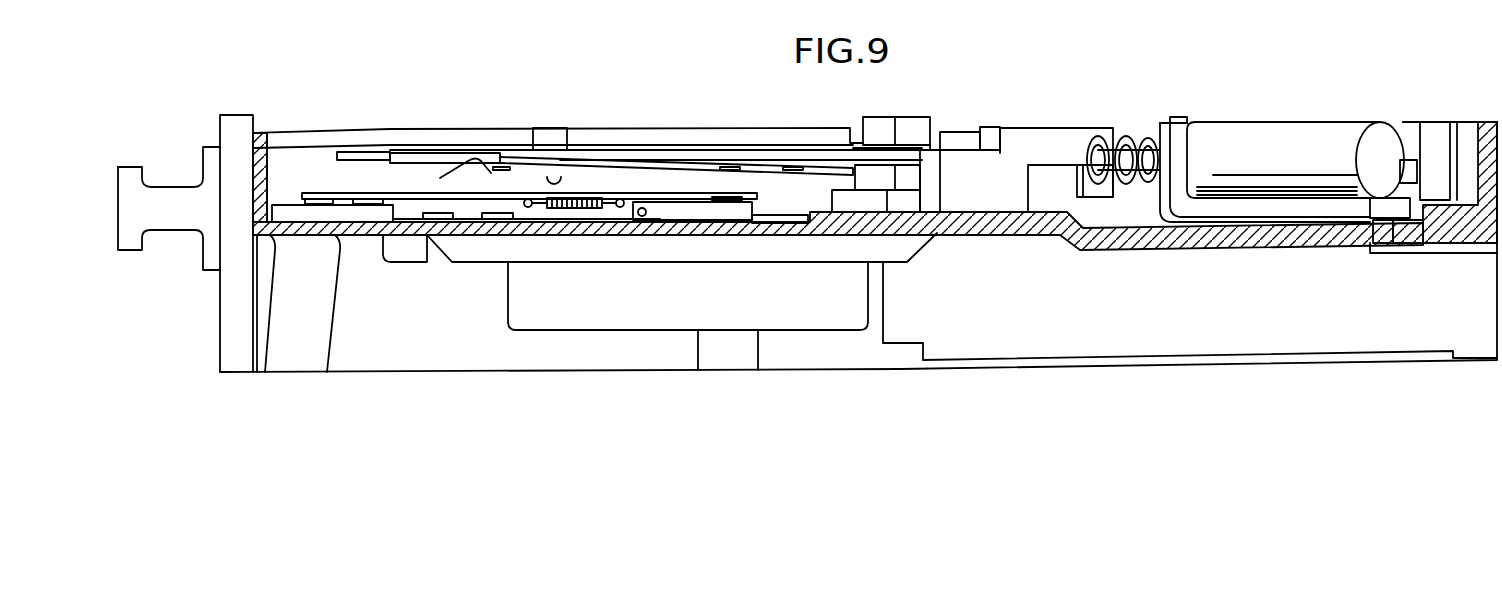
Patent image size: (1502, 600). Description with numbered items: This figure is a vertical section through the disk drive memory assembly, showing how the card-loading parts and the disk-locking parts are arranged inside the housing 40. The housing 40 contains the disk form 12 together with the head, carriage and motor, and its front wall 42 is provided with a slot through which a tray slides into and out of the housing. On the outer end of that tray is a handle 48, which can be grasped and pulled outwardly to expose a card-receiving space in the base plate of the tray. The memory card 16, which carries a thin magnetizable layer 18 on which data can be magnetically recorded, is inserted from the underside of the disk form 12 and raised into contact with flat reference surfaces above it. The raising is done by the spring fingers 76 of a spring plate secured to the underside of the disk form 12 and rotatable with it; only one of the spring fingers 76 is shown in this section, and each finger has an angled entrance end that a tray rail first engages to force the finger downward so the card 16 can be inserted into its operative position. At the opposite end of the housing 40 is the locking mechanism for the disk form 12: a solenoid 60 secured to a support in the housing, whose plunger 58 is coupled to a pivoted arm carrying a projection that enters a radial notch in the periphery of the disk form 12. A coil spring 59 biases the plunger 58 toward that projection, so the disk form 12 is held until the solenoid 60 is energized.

The disk form 12 is at (771, 146).
The memory card 16 is at (331, 163).
The magnetizable layer 18 is at (377, 152).
The housing 40 is at (216, 375).
The front wall 42 is at (247, 116).
The handle 48 is at (140, 167).
The plunger 58 is at (1127, 195).
The coil spring 59 is at (1128, 152).
The solenoid 60 is at (1253, 136).
The spring fingers 76 is at (556, 177).